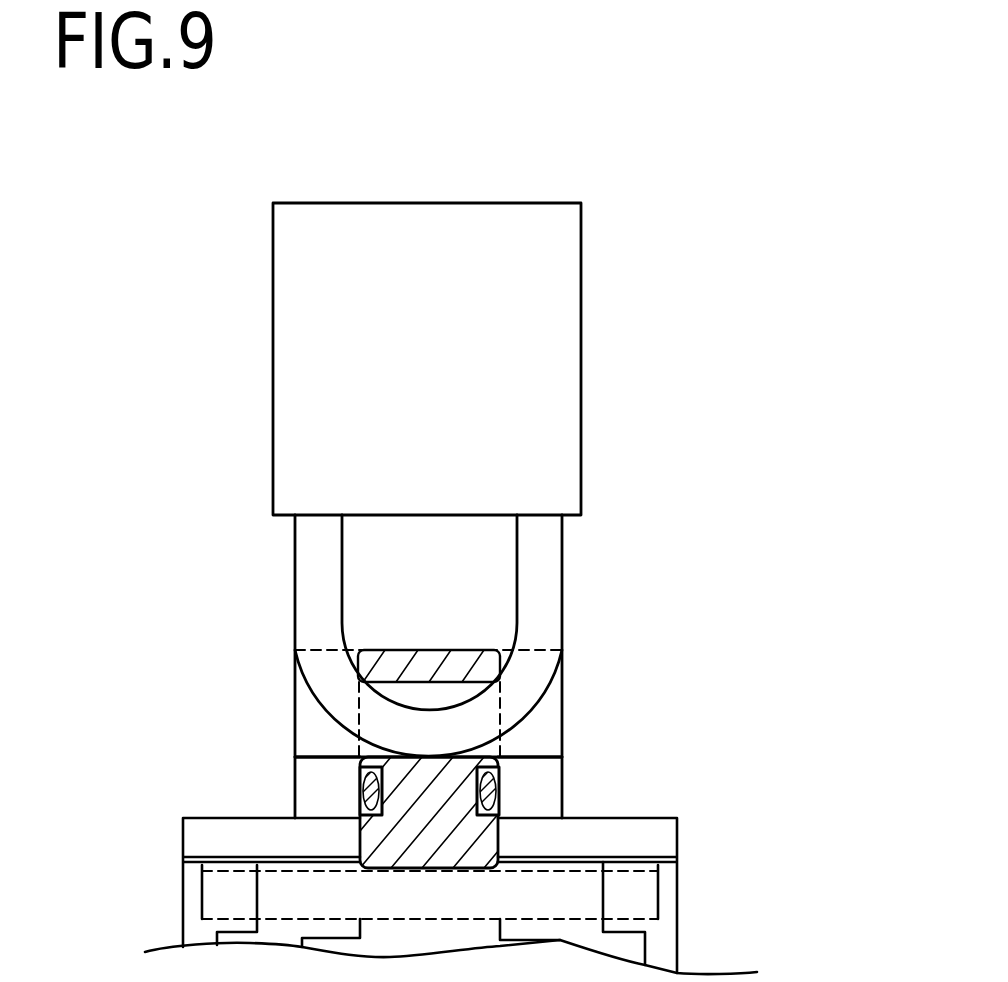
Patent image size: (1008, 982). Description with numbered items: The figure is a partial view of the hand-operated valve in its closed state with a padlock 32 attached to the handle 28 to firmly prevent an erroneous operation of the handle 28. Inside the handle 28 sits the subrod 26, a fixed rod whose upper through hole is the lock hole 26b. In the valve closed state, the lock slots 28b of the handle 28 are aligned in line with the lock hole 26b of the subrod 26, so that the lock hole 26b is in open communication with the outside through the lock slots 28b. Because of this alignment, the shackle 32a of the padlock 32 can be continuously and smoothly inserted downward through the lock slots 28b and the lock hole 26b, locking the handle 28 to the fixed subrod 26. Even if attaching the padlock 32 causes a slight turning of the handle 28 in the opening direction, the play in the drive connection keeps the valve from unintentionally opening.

The padlock 32 is at (542, 347).
The shackle 32a is at (537, 590).
The handle 28 is at (550, 717).
The lock slots 28b is at (322, 756).
The subrod 26 is at (478, 832).
The lock hole 26b is at (377, 755).